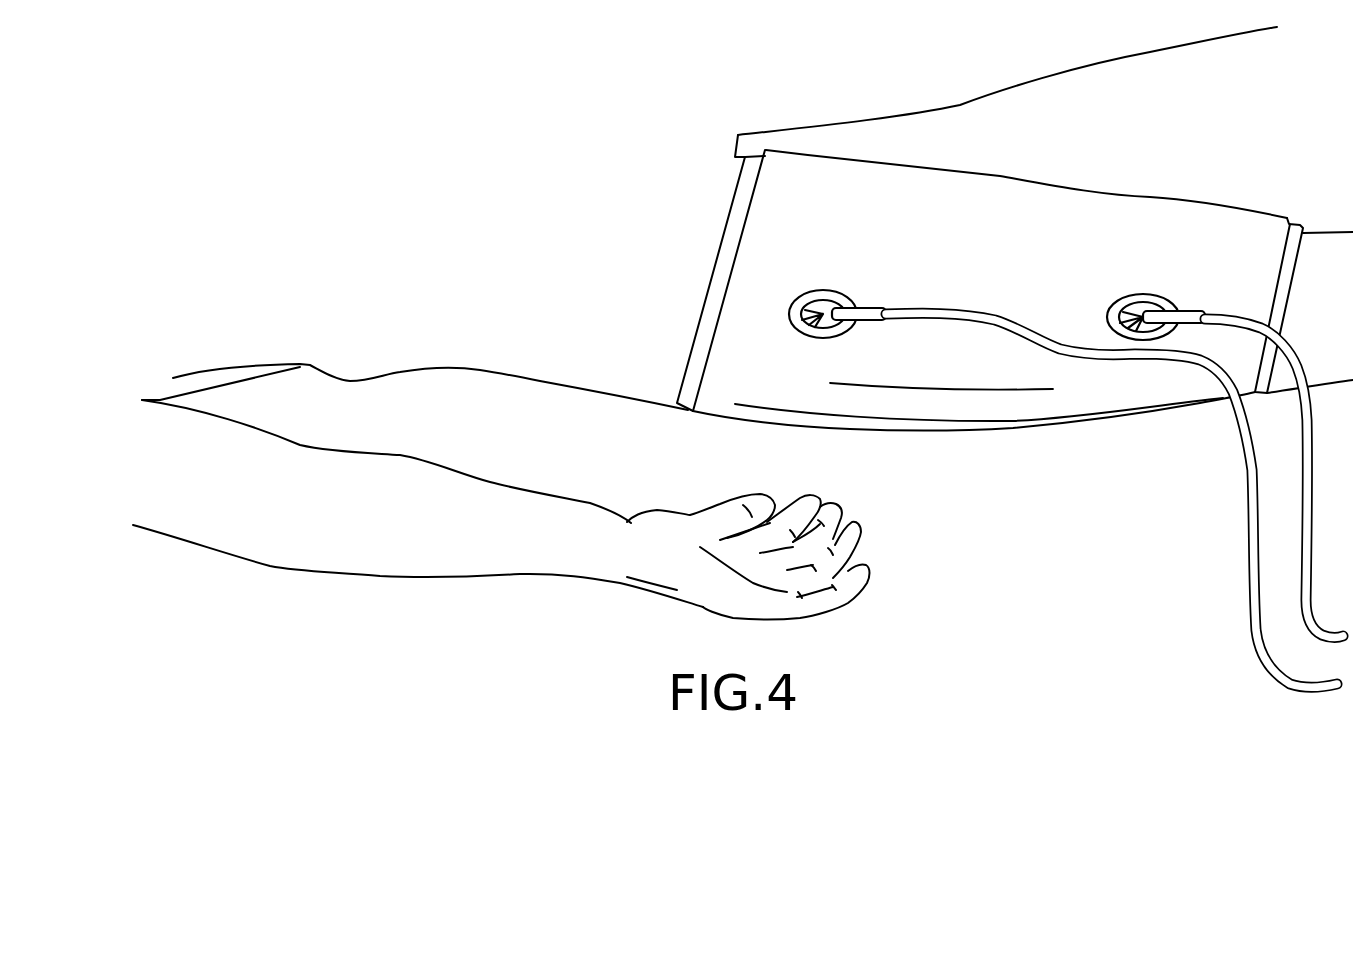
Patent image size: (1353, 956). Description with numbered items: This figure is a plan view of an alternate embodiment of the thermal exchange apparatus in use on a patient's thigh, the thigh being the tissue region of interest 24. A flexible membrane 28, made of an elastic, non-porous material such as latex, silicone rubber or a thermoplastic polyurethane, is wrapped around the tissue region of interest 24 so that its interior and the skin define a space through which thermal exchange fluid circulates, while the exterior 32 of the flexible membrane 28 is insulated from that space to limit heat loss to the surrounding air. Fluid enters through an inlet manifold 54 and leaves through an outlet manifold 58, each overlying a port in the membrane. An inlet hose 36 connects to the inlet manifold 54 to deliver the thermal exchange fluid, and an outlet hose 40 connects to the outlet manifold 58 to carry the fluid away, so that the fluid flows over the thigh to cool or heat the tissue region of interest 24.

The tissue region of interest 24 is at (703, 253).
The flexible membrane 28 is at (1065, 208).
The exterior of the flexible membrane 32 is at (932, 234).
The inlet hose 36 is at (1313, 483).
The outlet hose 40 is at (1250, 560).
The inlet manifold 54 is at (1157, 304).
The outlet manifold 58 is at (837, 330).